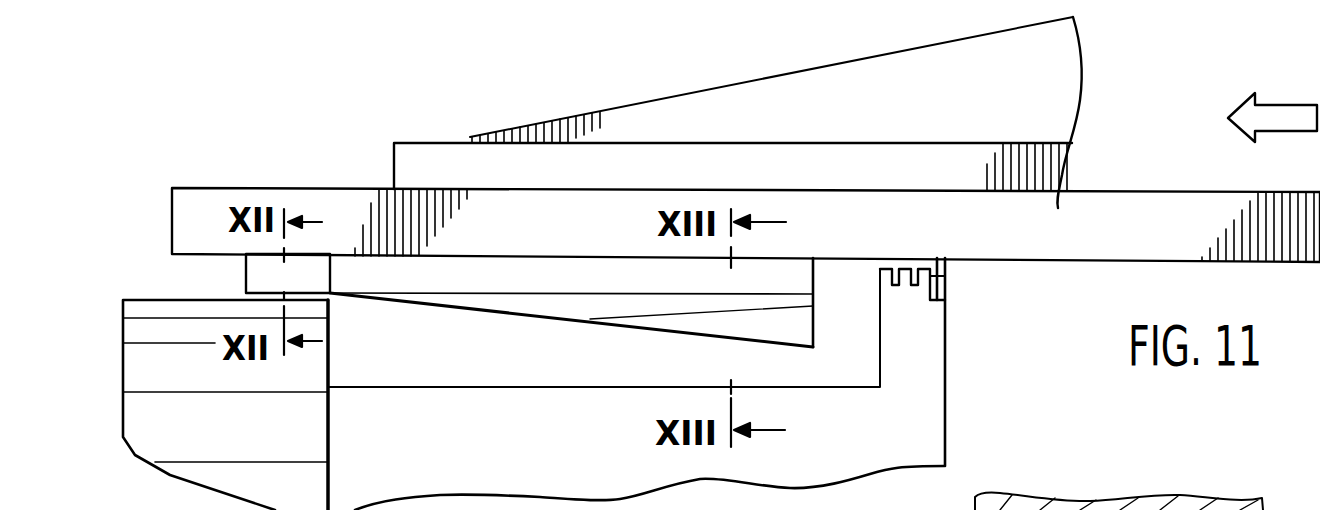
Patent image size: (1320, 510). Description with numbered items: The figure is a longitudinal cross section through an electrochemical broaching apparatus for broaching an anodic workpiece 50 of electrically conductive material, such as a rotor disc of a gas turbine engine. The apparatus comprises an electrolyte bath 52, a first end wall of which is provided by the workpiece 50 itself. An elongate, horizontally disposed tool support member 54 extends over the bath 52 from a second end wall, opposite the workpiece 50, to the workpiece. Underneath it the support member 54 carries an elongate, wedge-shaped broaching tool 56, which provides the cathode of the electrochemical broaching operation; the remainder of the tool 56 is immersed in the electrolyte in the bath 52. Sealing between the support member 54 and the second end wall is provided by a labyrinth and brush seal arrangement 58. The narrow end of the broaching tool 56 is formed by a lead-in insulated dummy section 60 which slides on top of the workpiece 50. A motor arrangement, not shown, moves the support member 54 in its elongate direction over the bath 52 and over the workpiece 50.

The anodic workpiece 50 is at (135, 348).
The electrolyte bath 52 is at (612, 375).
The tool support member 54 is at (1066, 178).
The broaching tool 56 is at (795, 278).
The labyrinth and brush seal arrangement 58 is at (945, 275).
The lead-in insulated dummy section 60 is at (248, 273).